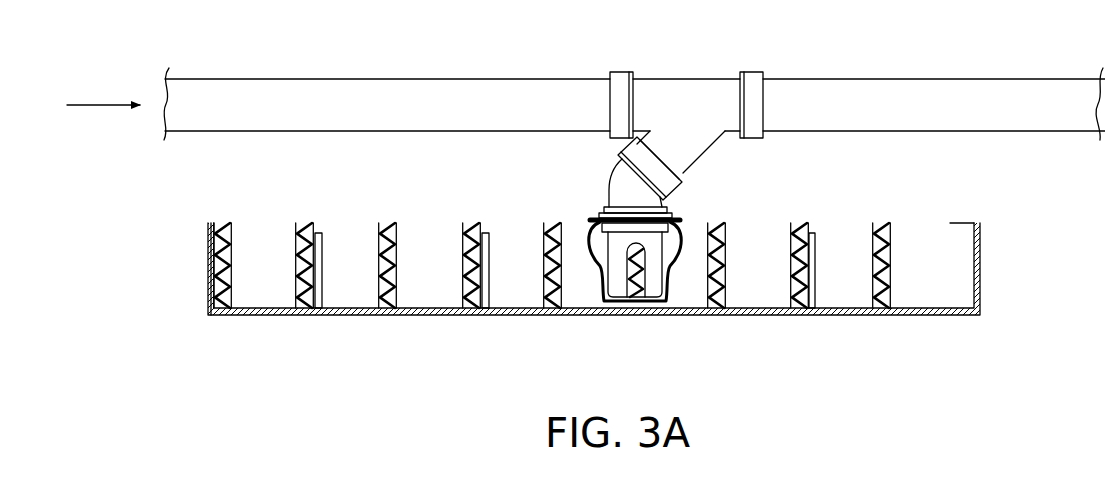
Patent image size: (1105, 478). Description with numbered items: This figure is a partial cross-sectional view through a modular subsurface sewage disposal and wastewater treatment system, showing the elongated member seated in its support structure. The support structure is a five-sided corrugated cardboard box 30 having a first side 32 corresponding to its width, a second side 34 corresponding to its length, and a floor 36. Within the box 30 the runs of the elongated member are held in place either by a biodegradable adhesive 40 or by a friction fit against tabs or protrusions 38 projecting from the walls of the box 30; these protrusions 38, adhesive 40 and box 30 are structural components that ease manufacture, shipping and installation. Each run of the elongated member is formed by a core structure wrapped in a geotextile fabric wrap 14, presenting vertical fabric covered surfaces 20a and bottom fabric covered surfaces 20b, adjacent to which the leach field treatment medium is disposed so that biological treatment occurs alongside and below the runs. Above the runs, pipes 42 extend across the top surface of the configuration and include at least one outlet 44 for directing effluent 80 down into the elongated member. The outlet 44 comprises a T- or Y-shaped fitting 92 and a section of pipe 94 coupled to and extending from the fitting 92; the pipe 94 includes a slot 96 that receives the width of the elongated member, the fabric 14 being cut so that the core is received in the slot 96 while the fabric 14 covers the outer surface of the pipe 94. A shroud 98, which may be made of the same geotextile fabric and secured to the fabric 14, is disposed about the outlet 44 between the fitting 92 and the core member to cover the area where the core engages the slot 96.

The fabric wrap 14 is at (594, 314).
The vertical fabric covered surface 20a is at (369, 227).
The bottom fabric covered surface 20b is at (304, 315).
The box 30 is at (980, 268).
The first side 32 is at (955, 223).
The second side 34 is at (208, 266).
The floor 36 is at (238, 318).
The protrusions 38 is at (322, 240).
The biodegradable adhesive 40 is at (322, 304).
The pipes 42 is at (985, 79).
The outlet 44 is at (661, 76).
The effluent 80 is at (103, 104).
The fitting 92 is at (611, 75).
The section of pipe 94 is at (690, 224).
The slot 96 is at (656, 277).
The shroud 98 is at (591, 250).